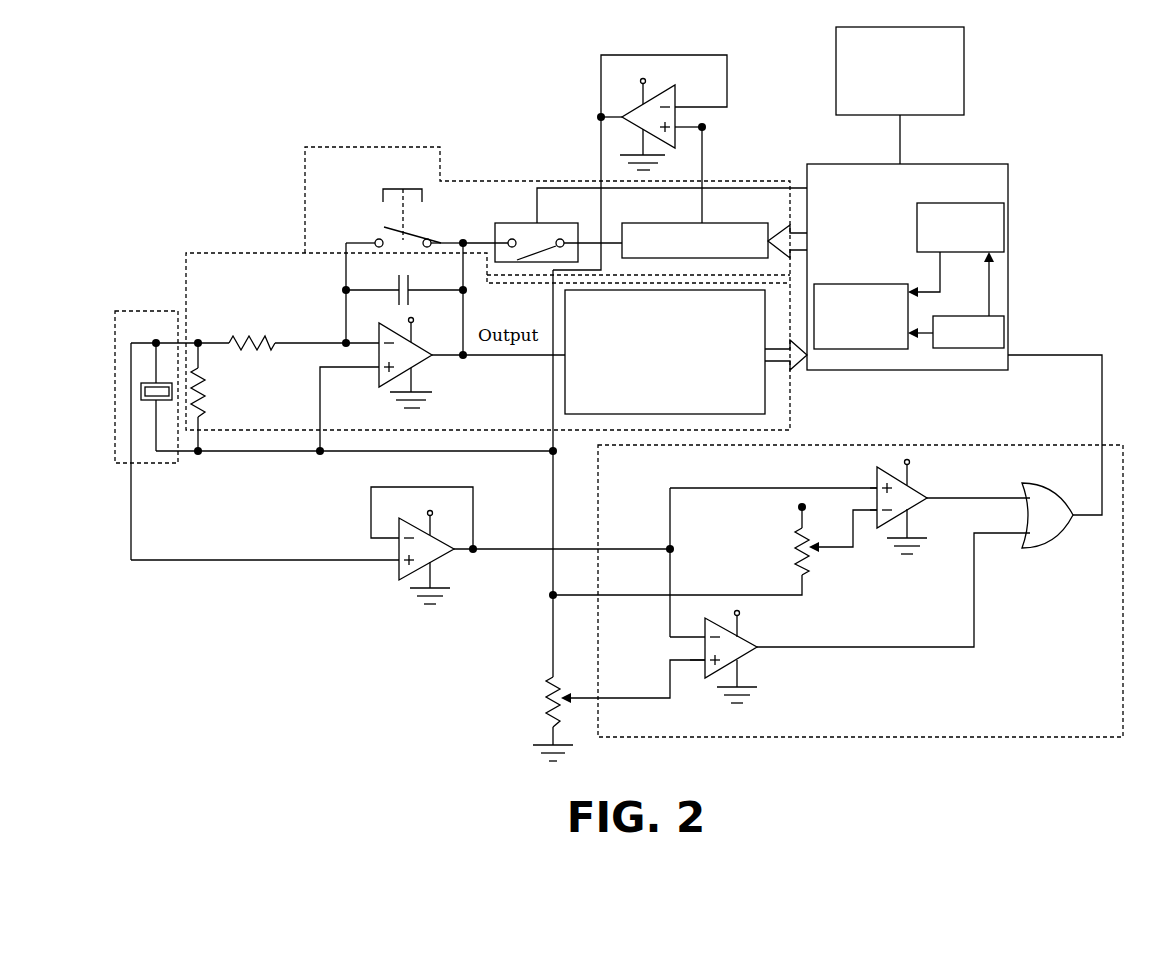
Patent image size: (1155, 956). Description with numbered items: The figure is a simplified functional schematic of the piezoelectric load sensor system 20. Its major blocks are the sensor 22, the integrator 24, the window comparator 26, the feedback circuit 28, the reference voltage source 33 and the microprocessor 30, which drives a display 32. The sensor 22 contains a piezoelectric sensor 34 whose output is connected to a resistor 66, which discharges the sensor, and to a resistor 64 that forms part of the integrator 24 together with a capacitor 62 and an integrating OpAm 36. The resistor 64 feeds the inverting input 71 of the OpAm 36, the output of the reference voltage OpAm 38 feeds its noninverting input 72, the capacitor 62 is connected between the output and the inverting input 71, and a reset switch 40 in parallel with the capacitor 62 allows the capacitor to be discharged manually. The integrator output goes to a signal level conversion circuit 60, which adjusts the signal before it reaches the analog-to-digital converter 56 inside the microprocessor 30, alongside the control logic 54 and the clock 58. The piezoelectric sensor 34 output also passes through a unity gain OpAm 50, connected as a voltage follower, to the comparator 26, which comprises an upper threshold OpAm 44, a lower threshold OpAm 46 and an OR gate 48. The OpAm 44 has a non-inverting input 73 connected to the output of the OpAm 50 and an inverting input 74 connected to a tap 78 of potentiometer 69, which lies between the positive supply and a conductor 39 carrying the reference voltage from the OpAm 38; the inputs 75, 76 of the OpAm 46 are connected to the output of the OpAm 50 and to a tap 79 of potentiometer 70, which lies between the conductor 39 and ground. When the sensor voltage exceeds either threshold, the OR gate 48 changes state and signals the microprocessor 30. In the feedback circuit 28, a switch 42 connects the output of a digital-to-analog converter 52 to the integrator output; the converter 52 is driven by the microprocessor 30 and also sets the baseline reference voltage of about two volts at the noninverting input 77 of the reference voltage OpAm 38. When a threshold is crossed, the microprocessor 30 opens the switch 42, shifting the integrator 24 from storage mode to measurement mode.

The piezoelectric load sensor system 20 is at (279, 665).
The sensor 22 is at (123, 311).
The integrator 24 is at (203, 253).
The comparator 26 is at (1061, 444).
The feedback circuit 28 is at (515, 180).
The microprocessor 30 is at (934, 253).
The display 32 is at (965, 70).
The reference voltage source 33 is at (674, 135).
The piezoelectric sensor 34 is at (140, 400).
The integrating operational amplifier 36 is at (425, 358).
The reference voltage operational amplifier 38 is at (646, 120).
The conductor 39 is at (612, 595).
The reset switch 40 is at (380, 207).
The switch 42 is at (501, 225).
The upper threshold operational amplifier 44 is at (902, 493).
The lower threshold operational amplifier 46 is at (745, 650).
The OR gate 48 is at (1047, 506).
The unity gain operational amplifier 50 is at (424, 560).
The digital-to-analog converter 52 is at (713, 237).
The control logic 54 is at (1004, 228).
The analog-to-digital converter 56 is at (886, 300).
The clock 58 is at (1004, 333).
The signal level conversion circuit 60 is at (745, 381).
The capacitor 62 is at (404, 282).
The resistor 64 is at (270, 340).
The resistor 66 is at (207, 376).
The potentiometer 69 is at (810, 513).
The potentiometer 70 is at (553, 680).
The inverting input 71 is at (360, 334).
The noninverting input 72 is at (349, 409).
The non-inverting input 73 is at (864, 477).
The inverting input 74 is at (868, 521).
The inverting input of OP5 75 is at (687, 626).
The non-inverting input of OP5 76 is at (693, 671).
The noninverting input 77 is at (735, 169).
The tap 78 is at (821, 542).
The tap 79 is at (633, 681).